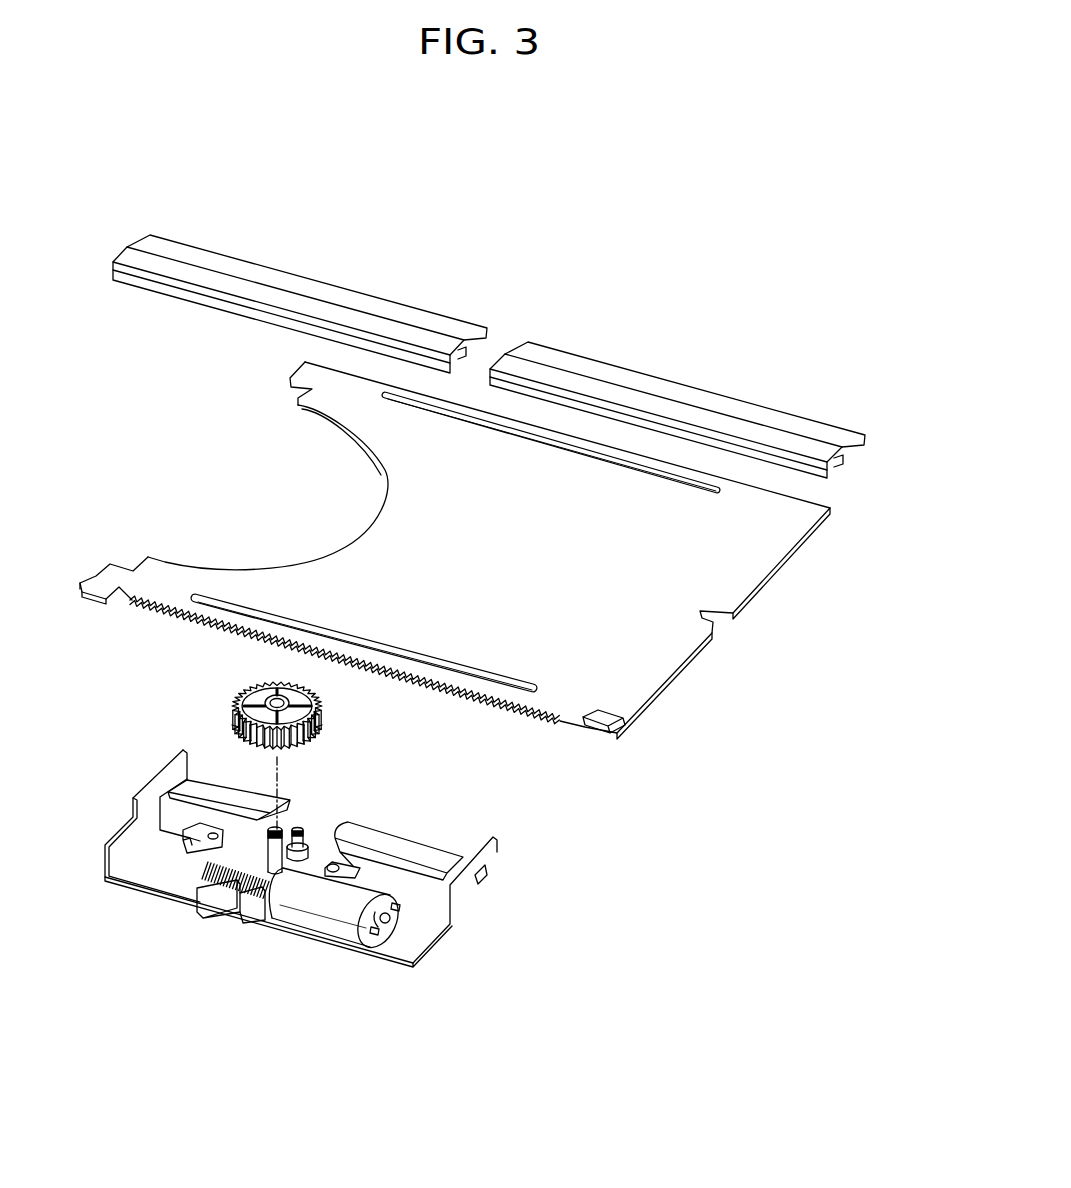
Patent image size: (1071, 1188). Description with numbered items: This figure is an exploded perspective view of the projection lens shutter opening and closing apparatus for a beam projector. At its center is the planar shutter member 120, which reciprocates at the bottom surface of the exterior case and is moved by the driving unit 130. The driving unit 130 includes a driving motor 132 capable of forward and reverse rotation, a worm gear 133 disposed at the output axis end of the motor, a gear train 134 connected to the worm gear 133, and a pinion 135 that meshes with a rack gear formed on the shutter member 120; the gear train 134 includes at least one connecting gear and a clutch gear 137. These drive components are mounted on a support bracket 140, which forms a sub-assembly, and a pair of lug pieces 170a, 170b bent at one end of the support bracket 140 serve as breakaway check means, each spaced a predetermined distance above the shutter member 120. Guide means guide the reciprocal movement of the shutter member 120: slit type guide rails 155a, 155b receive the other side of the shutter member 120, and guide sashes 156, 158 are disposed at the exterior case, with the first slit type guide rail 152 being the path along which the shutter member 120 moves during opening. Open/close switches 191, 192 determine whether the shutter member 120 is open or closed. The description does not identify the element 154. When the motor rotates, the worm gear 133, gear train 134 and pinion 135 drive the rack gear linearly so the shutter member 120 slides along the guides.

The shutter member 120 is at (455, 550).
The driving unit 130 is at (523, 717).
The driving motor 132 is at (330, 918).
The worm gear 133 is at (247, 920).
The gear train 134 is at (268, 733).
The pinion 135 is at (290, 753).
The clutch gear 137 is at (321, 718).
The support bracket 140 is at (326, 857).
The first slit type guide rail 152 is at (235, 605).
The guide pins 154 is at (298, 827).
The slit type guide rail 155a is at (468, 358).
The slit type guide rail 155b is at (838, 470).
The guide sash 156 is at (362, 300).
The guide sash 158 is at (700, 395).
The lug piece 170a is at (247, 805).
The lug piece 170b is at (380, 838).
The open/close switch 191 is at (207, 850).
The open/close switch 192 is at (346, 868).